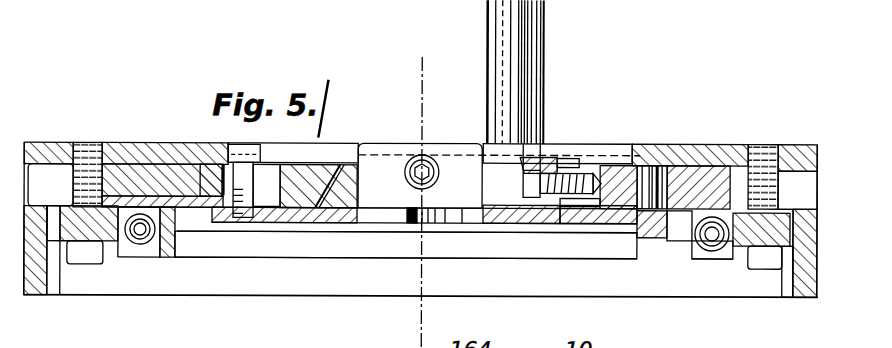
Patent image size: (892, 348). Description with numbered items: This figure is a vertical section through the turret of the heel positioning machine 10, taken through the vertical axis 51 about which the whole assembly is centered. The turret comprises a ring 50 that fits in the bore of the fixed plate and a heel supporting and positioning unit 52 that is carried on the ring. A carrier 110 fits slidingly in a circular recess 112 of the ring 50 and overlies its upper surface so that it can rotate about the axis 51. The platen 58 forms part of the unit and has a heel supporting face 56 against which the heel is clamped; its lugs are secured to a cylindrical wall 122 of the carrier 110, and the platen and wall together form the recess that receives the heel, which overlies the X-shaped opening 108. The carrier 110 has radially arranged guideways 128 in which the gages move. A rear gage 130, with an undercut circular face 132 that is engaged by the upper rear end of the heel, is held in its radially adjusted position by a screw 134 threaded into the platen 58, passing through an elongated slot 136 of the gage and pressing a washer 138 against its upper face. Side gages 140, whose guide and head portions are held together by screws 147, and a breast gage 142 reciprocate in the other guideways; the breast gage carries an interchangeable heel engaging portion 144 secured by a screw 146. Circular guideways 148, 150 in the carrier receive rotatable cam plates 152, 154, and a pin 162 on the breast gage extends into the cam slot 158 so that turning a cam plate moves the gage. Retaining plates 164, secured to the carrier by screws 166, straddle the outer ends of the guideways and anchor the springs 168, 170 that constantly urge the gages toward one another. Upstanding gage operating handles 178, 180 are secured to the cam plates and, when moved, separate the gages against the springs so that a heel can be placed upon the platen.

The apparatus 10 is at (340, 316).
The ring 50 is at (33, 287).
The vertical axis 51 is at (420, 68).
The heel supporting and positioning unit 52 is at (331, 97).
The heel supporting face 56 is at (596, 208).
The platen 58 is at (560, 226).
The X-shaped opening 108 is at (484, 225).
The carrier 110 is at (50, 150).
The circular recess 112 is at (773, 250).
The cylindrical wall 122 is at (632, 147).
The guideways 128 is at (152, 168).
The rear gage 130 is at (326, 184).
The undercut circular face 132 is at (333, 198).
The screw 134 is at (242, 182).
The elongated slot 136 is at (240, 165).
The washer 138 is at (260, 152).
The side gages 140 is at (451, 152).
The breast gage 142 is at (580, 158).
The interchangeable heel engaging portion 144 is at (516, 210).
The screw 146 is at (530, 181).
The screws 147 is at (413, 172).
The circular guideway 148 is at (112, 143).
The circular guideway 150 is at (714, 248).
The cam plate 152 is at (136, 148).
The cam plate 154 is at (104, 233).
The cam slot 158 is at (640, 222).
The pin 162 is at (657, 182).
The retaining plates 164 is at (58, 252).
The screws 166 is at (92, 255).
The spring 168 is at (145, 246).
The spring 170 is at (700, 252).
The gage operating handle 178 is at (489, 48).
The gage operating handle 180 is at (540, 30).